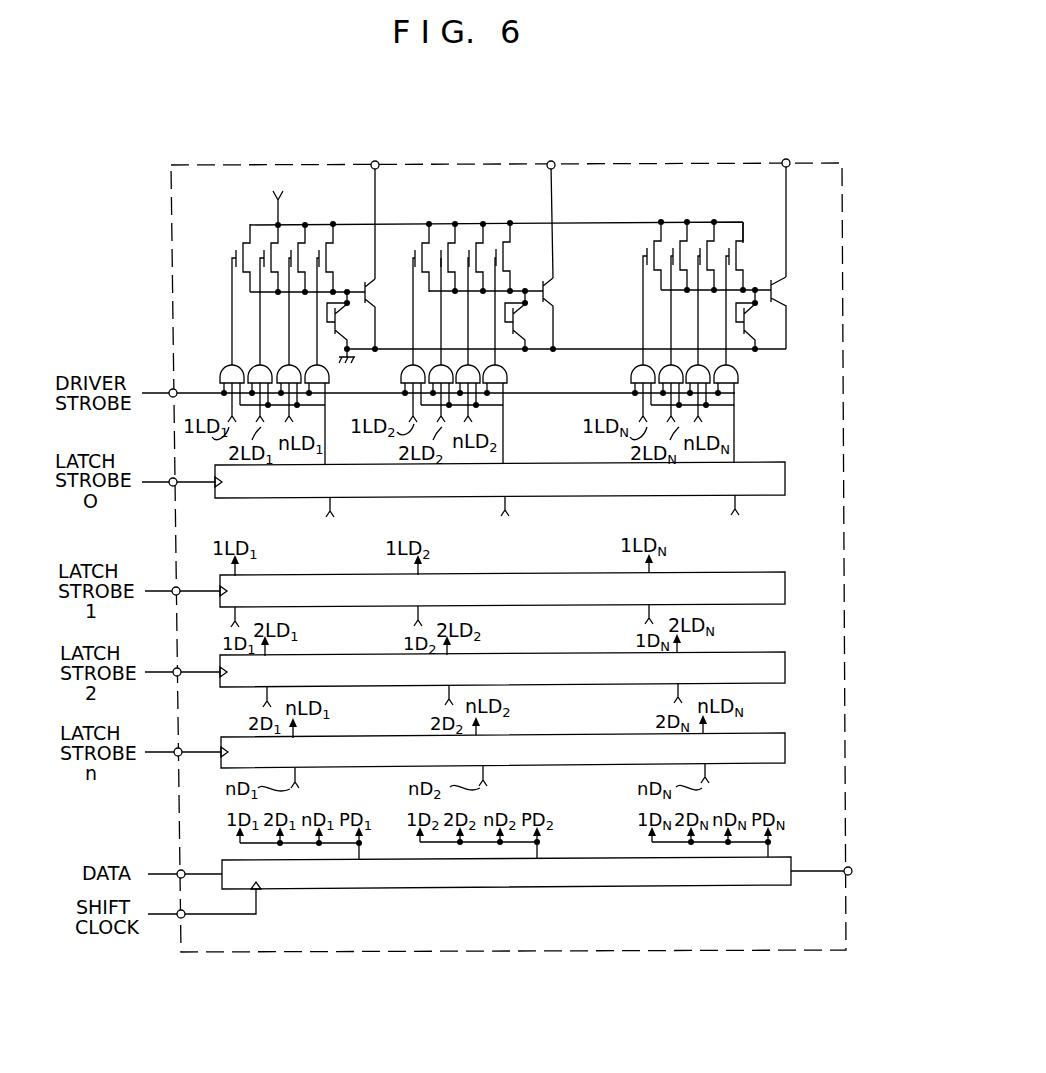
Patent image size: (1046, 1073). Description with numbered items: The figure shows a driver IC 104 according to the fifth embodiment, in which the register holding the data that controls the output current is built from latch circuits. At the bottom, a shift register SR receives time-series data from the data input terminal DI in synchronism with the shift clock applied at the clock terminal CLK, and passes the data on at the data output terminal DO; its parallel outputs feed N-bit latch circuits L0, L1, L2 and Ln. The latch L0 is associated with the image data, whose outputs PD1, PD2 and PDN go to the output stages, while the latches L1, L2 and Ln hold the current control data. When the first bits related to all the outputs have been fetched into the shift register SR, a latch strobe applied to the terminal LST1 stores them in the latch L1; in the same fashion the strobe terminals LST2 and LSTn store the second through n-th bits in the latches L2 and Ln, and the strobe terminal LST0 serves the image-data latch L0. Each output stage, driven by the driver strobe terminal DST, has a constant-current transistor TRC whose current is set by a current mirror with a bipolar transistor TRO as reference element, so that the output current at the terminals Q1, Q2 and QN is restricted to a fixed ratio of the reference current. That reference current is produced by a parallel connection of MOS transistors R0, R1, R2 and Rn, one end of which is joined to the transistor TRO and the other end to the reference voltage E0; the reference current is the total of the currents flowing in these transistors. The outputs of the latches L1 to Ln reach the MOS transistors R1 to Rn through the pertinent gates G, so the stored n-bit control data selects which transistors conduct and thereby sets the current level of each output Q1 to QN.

The driver IC 104 is at (705, 953).
The output terminal Q1 is at (374, 161).
The output terminal Q2 is at (551, 161).
The output terminal QN is at (786, 159).
The reference voltage E0 is at (277, 196).
The MOS transistor R1 is at (236, 246).
The MOS transistor R2 is at (264, 247).
The MOS transistor Rn is at (291, 246).
The MOS transistor R0 is at (319, 246).
The constant-current transistor TRC is at (378, 292).
The bipolar transistor TRO is at (347, 327).
The gate G is at (221, 370).
The driver strobe line DST is at (171, 391).
The latch strobe 0 line LST0 is at (170, 481).
The terminal LST1 is at (173, 589).
The latch strobe 2 line LST2 is at (174, 671).
The latch strobe n line LSTn is at (175, 751).
The latch circuit L0 is at (500, 480).
The latch circuit L1 is at (502, 589).
The latch circuit L2 is at (502, 669).
The latch circuit Ln is at (503, 750).
The shift register SR is at (506, 873).
The print data output 1 of latch 0 PD1 is at (329, 505).
The print data output 2 of latch 0 PD2 is at (505, 522).
The print data output N of latch 0 PDN is at (734, 520).
The terminal DI is at (179, 871).
The data output DO is at (849, 867).
The shift clock input CLK is at (181, 917).